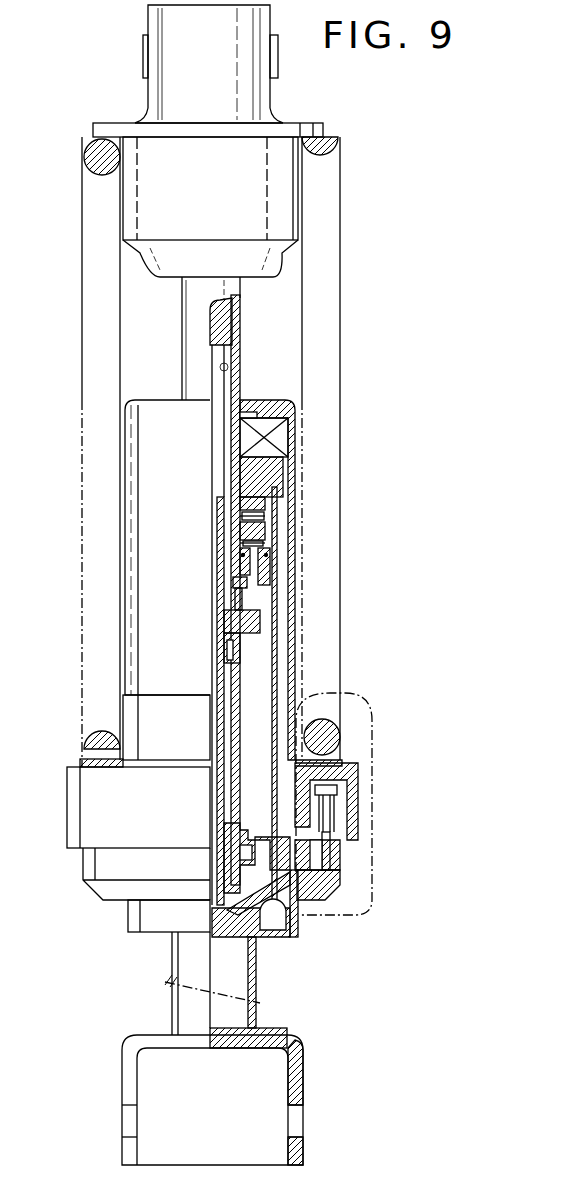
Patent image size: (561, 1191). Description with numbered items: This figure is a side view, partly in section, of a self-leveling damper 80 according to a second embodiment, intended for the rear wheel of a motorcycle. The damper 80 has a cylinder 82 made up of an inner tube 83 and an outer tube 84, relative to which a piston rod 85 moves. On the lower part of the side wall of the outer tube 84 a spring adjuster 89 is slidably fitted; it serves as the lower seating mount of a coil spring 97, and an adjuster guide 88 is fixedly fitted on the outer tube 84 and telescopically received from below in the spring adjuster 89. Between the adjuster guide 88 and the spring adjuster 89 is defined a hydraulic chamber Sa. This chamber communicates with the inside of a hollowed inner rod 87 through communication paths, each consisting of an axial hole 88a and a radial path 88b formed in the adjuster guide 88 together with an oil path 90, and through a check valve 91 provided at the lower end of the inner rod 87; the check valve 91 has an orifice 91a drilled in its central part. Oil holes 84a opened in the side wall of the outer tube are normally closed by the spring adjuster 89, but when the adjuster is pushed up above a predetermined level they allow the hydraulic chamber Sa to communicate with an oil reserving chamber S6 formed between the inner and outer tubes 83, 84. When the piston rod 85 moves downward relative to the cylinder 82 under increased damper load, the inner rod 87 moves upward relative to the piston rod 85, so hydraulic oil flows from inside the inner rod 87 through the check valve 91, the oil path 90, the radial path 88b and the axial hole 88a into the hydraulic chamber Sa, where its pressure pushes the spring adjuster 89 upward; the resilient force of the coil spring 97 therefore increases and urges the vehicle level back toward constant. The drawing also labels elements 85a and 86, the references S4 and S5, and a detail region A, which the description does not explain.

The self-leveling damper 80 is at (340, 127).
The cylinder 82 is at (297, 440).
The inner tube 83 is at (284, 703).
The outer tube 84 is at (280, 662).
The oil holes 84a is at (292, 817).
The piston rod 85 is at (188, 353).
The plate 85a is at (232, 372).
The contact member 86 is at (268, 584).
The inner rod 87 is at (222, 731).
The adjuster guide 88 is at (338, 880).
The axial hole 88a is at (342, 873).
The radial path 88b is at (305, 920).
The spring adjuster 89 is at (350, 792).
The oil path 90 is at (275, 905).
The check valve 91 is at (253, 955).
The orifice 91a is at (217, 938).
The coil spring 97 is at (84, 160).
The switch S4 is at (268, 514).
The switch S5 is at (256, 657).
The oil reserving chamber S6 is at (282, 568).
The hydraulic chamber Sa is at (342, 852).
The detail region A is at (380, 730).